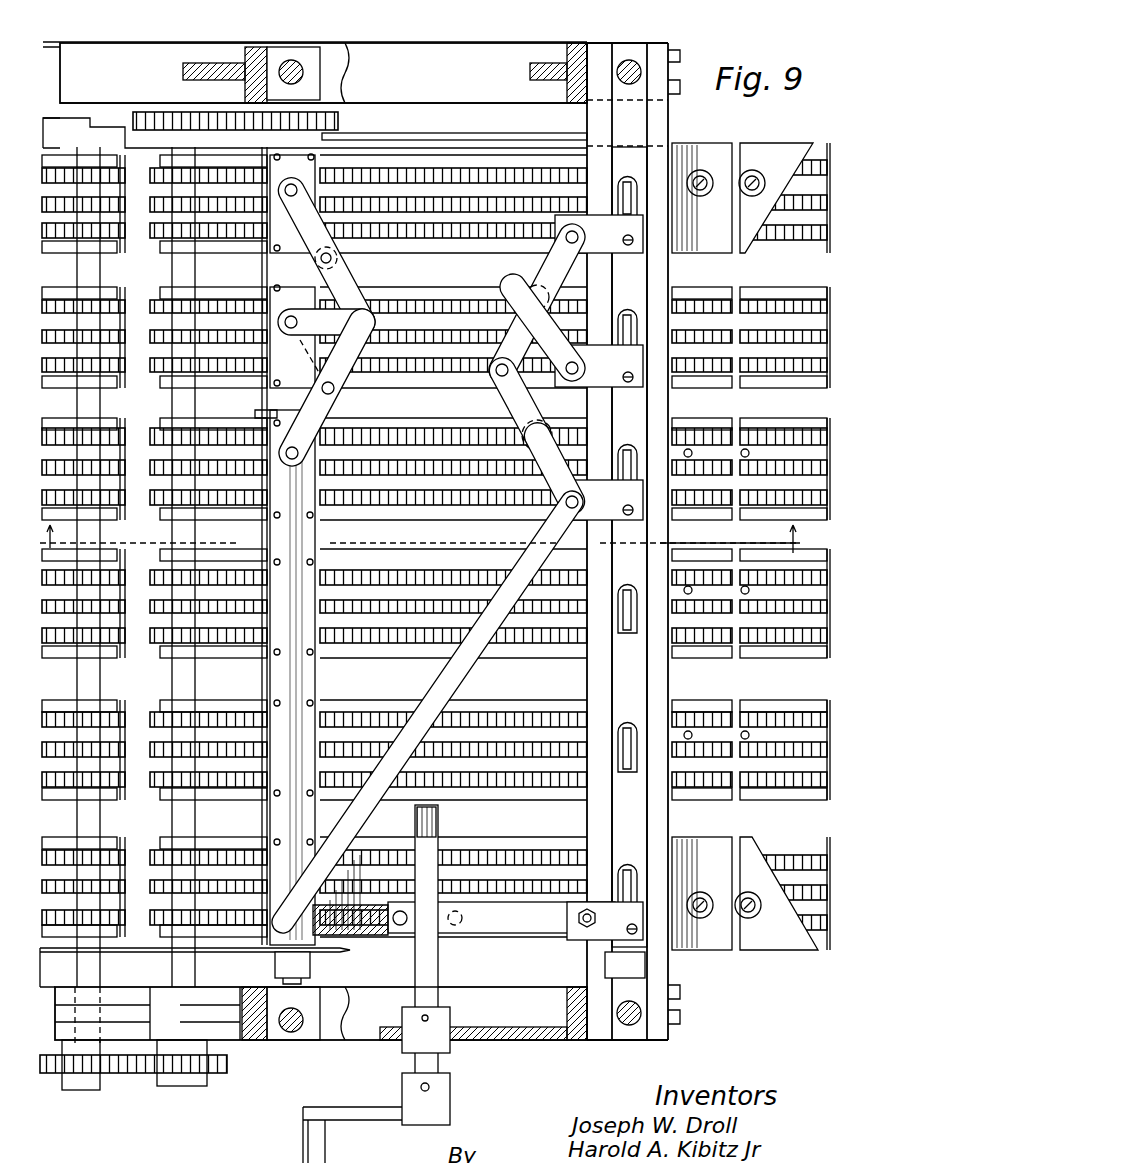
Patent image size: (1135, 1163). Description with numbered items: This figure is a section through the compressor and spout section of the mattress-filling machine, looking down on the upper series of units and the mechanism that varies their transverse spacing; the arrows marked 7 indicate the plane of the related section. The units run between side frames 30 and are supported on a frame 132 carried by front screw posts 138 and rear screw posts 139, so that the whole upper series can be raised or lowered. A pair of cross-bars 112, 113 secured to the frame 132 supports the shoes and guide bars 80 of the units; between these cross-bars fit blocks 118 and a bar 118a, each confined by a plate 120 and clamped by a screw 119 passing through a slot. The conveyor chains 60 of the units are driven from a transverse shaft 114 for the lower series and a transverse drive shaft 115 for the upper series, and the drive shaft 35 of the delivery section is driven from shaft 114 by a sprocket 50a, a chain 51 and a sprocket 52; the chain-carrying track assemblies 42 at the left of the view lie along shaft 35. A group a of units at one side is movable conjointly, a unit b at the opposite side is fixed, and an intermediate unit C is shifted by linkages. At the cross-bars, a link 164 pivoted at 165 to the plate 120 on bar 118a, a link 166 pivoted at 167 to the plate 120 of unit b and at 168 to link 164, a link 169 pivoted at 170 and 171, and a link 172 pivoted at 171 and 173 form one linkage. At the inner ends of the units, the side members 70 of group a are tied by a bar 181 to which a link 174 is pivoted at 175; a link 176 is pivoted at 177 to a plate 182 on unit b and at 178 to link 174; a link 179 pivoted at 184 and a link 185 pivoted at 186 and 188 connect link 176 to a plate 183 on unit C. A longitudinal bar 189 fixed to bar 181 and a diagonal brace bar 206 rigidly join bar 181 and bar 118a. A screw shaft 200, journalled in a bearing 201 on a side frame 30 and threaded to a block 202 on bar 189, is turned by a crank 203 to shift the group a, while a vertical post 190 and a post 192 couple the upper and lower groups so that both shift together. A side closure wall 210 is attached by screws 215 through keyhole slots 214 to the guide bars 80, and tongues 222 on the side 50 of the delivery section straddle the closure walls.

The section line 7- 7 is at (427, 539).
The side frame 30 is at (262, 1030).
The drive shaft of the delivery section 35 is at (100, 268).
The chain track assembly 42 is at (60, 700).
The side of the delivery section 50 is at (750, 385).
The sprocket 50a is at (215, 1068).
The chain 51 is at (130, 1075).
The sprocket 52 is at (90, 1078).
The conveyor chain 60 is at (420, 300).
The side member 70 is at (210, 655).
The guide bar 80 is at (785, 546).
The cross-bar 112 is at (590, 130).
The cross-bar 113 is at (668, 127).
The transverse shaft 114 is at (190, 1088).
The transverse drive shaft 115 is at (267, 818).
The block 118 is at (640, 210).
The bar 118a is at (640, 425).
The screw 119 is at (627, 772).
The plate 120 is at (599, 367).
The frame 132 is at (500, 57).
The front screw post 138 is at (630, 60).
The rear screw post 139 is at (291, 60).
The link 164 is at (554, 468).
The pivot 165 is at (579, 500).
The link 166 is at (514, 355).
The pivot 167 is at (578, 238).
The pivot 168 is at (505, 376).
The link 169 is at (543, 427).
The pivot 170 is at (522, 425).
The pivot 171 is at (578, 365).
The link 172 is at (542, 327).
The pivot 173 is at (545, 275).
The link 174 is at (308, 427).
The pivot 175 is at (307, 447).
The link 176 is at (350, 278).
The pivot 177 is at (291, 196).
The pivot 178 is at (362, 328).
The link 179 is at (300, 364).
The bar 181 is at (315, 533).
The plate 182 is at (292, 203).
The plate 183 is at (290, 327).
The pivot 184 is at (332, 395).
The link 185 is at (326, 270).
The pivot 186 is at (291, 328).
The pivot 188 is at (318, 265).
The longitudinal bar 189 is at (478, 921).
The vertical post 190 is at (645, 965).
The post 192 is at (310, 963).
The screw shaft 200 is at (440, 968).
The bearing 201 is at (450, 1045).
The block 202 is at (477, 918).
The crank 203 is at (340, 1120).
The brace bar 206 is at (470, 688).
The side wall 210 is at (775, 150).
The keyhole slot 214 is at (760, 178).
The screw 215 is at (705, 178).
The tongue 222 is at (350, 951).
The group of units a is at (403, 553).
The fixed unit b is at (458, 148).
The intermediate unit C is at (455, 291).